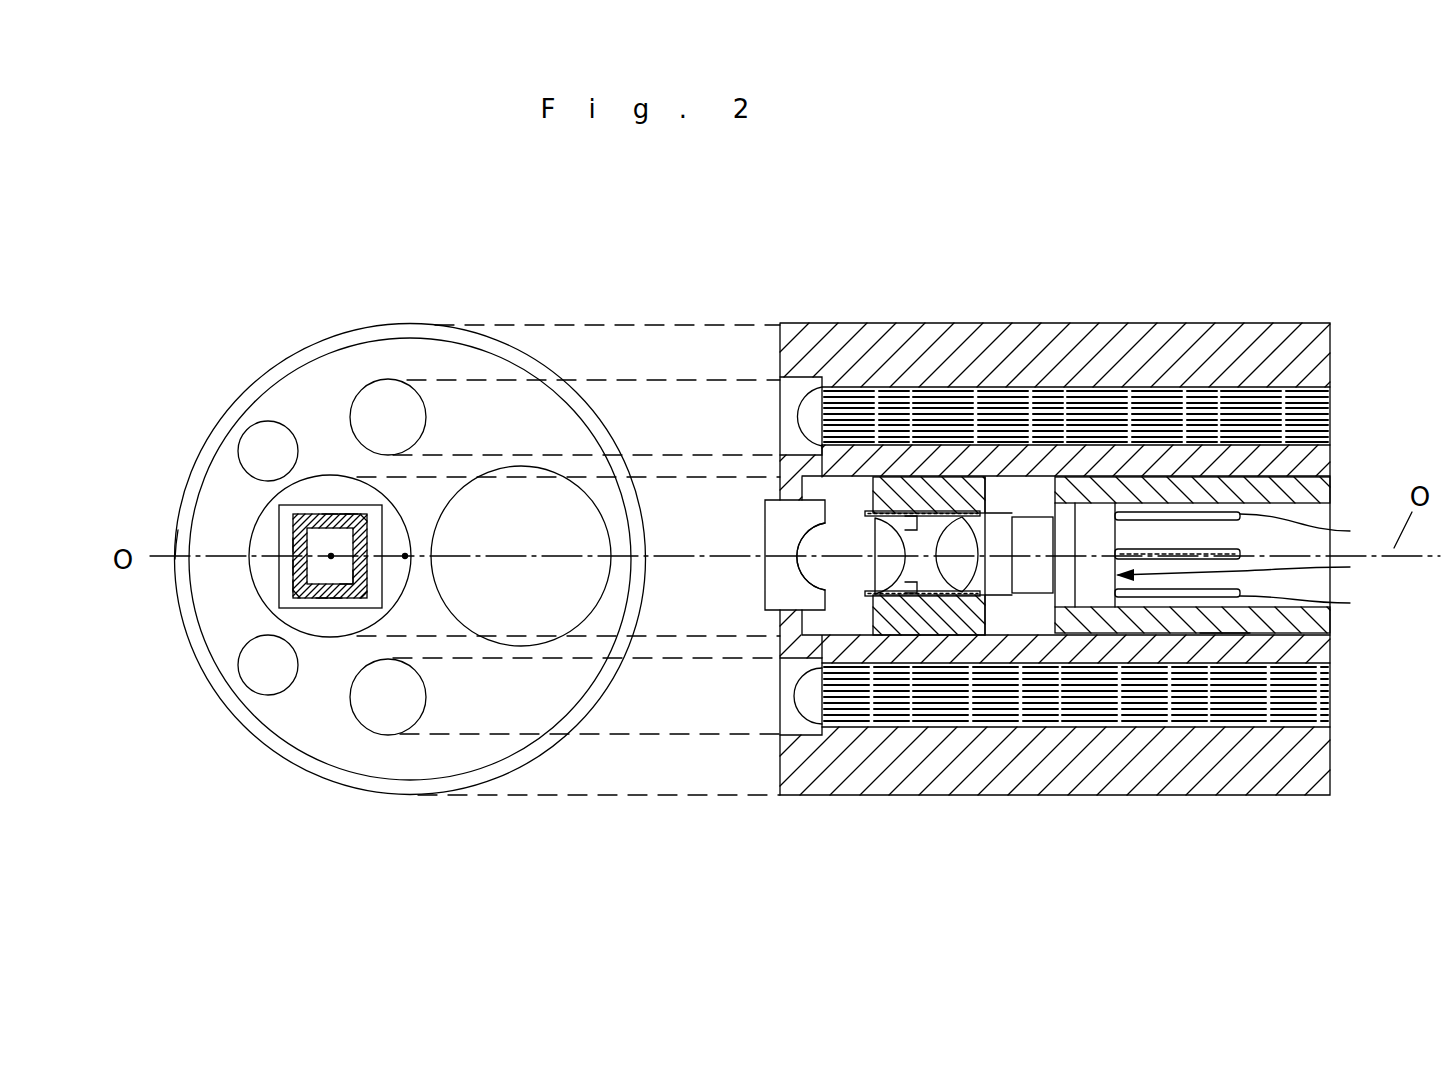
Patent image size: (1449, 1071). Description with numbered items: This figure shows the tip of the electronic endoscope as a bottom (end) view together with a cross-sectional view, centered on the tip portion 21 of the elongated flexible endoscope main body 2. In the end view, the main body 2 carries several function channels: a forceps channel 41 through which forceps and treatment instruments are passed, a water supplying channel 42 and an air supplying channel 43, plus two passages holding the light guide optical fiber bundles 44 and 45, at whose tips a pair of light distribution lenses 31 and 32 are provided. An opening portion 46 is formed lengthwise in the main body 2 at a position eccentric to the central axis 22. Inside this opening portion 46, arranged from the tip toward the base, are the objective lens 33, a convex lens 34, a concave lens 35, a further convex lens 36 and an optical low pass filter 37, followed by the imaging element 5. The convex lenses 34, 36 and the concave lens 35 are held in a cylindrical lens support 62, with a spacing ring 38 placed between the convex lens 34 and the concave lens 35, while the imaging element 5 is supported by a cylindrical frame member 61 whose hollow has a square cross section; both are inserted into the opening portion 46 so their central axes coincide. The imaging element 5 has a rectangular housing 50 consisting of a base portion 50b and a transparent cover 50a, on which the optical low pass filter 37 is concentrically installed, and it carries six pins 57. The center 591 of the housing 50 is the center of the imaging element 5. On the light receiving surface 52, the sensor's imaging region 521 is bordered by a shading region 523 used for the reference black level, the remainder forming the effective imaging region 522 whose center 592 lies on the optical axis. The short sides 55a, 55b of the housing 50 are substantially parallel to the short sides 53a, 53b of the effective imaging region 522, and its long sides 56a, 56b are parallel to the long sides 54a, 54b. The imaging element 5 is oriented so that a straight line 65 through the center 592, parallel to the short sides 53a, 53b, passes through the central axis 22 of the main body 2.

The endoscope main body 2 is at (449, 322).
The imaging element 5 is at (323, 494).
The tip portion 21 is at (418, 353).
The central axis 22 is at (410, 550).
The light distribution lens 31 is at (385, 400).
The light distribution lens 32 is at (390, 707).
The objective lens 33 is at (778, 512).
The convex lens 34 is at (885, 566).
The concave lens 35 is at (968, 578).
The convex lens 36 is at (1024, 540).
The optical low pass filter 37 is at (1040, 525).
The spacing ring 38 is at (905, 598).
The forceps channel 41 is at (590, 546).
The water supplying channel 42 is at (262, 445).
The air supplying channel 43 is at (272, 600).
The light guide optical fiber bundle 44 is at (905, 415).
The light guide optical fiber bundle 45 is at (988, 690).
The opening portion 46 is at (815, 565).
The housing 50 is at (1087, 593).
The cover 50a is at (1065, 593).
The base portion 50b is at (1105, 591).
The light receiving surface 52 is at (290, 508).
The imaging region 521 is at (295, 568).
The effective imaging region 522 is at (330, 515).
The shading region 523 is at (296, 600).
The short side 53a is at (342, 516).
The short side 53b is at (336, 600).
The long side 54a is at (363, 519).
The long side 54b is at (297, 545).
The short side 55a is at (350, 515).
The short side 55b is at (322, 600).
The long side 56a is at (367, 599).
The long side 56b is at (299, 590).
The pins 57 is at (1340, 531).
The center of housing 591 is at (346, 600).
The center of effective imaging region 592 is at (357, 600).
The frame member 61 is at (1225, 623).
The lens support 62 is at (952, 597).
The straight line 65 is at (208, 541).